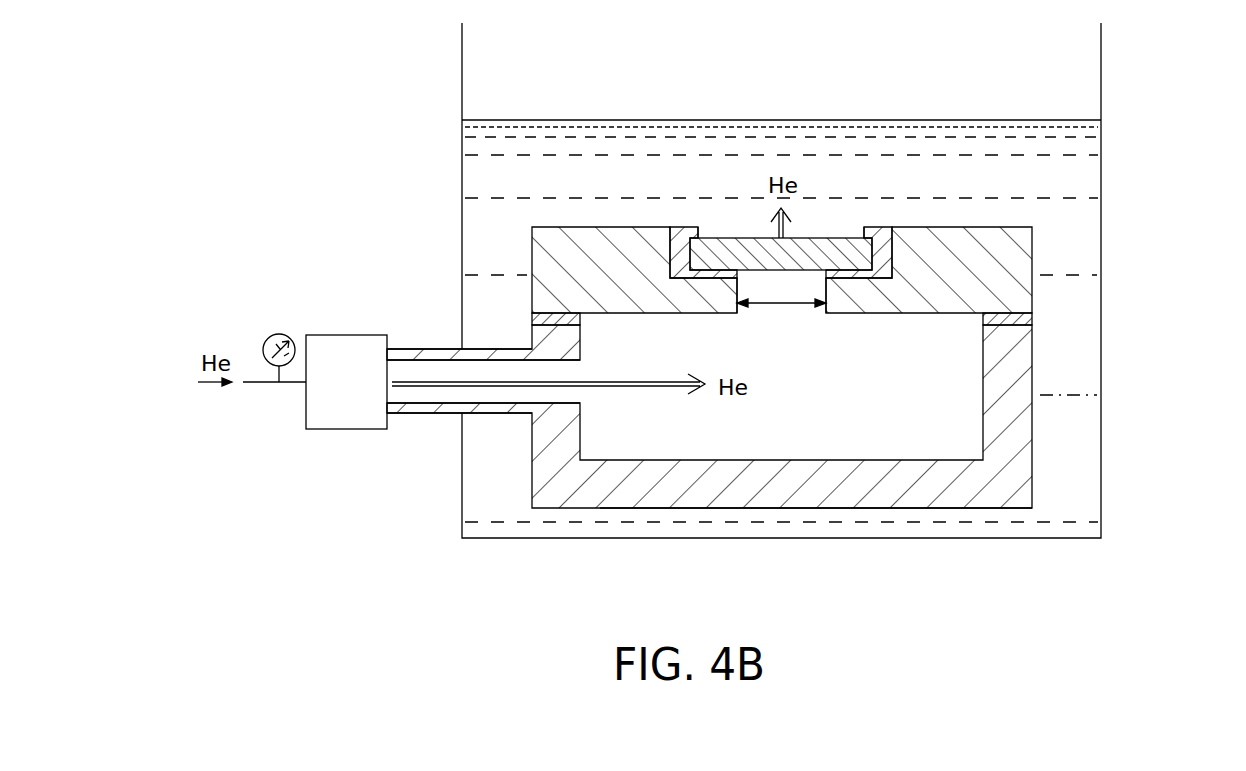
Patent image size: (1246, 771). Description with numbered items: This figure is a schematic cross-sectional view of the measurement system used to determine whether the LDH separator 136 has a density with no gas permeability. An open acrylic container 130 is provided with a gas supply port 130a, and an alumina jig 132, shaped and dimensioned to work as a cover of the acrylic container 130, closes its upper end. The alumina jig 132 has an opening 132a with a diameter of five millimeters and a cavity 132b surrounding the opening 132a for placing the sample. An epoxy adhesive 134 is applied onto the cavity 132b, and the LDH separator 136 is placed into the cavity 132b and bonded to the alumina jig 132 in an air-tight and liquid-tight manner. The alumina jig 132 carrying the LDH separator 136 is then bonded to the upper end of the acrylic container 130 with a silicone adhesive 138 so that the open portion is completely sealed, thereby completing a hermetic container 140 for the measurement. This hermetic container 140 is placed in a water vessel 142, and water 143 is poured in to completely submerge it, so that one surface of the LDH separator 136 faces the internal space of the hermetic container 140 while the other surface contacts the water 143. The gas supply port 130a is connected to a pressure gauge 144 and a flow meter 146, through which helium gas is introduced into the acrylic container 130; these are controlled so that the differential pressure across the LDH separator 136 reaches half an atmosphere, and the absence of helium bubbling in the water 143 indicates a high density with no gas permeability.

The acrylic container 130 is at (905, 495).
The gas supply port 130a is at (425, 415).
The alumina jig 132 is at (1015, 257).
The opening 132a is at (828, 290).
The cavity 132b is at (893, 247).
The epoxy adhesive 134 is at (886, 228).
The LDH separator 136 is at (731, 238).
The silicone adhesive 138 is at (1018, 321).
The hermetic container 140 is at (1033, 456).
The water vessel 142 is at (1101, 96).
The water 143 is at (483, 145).
The pressure gauge 144 is at (271, 336).
The flow meter 146 is at (352, 352).